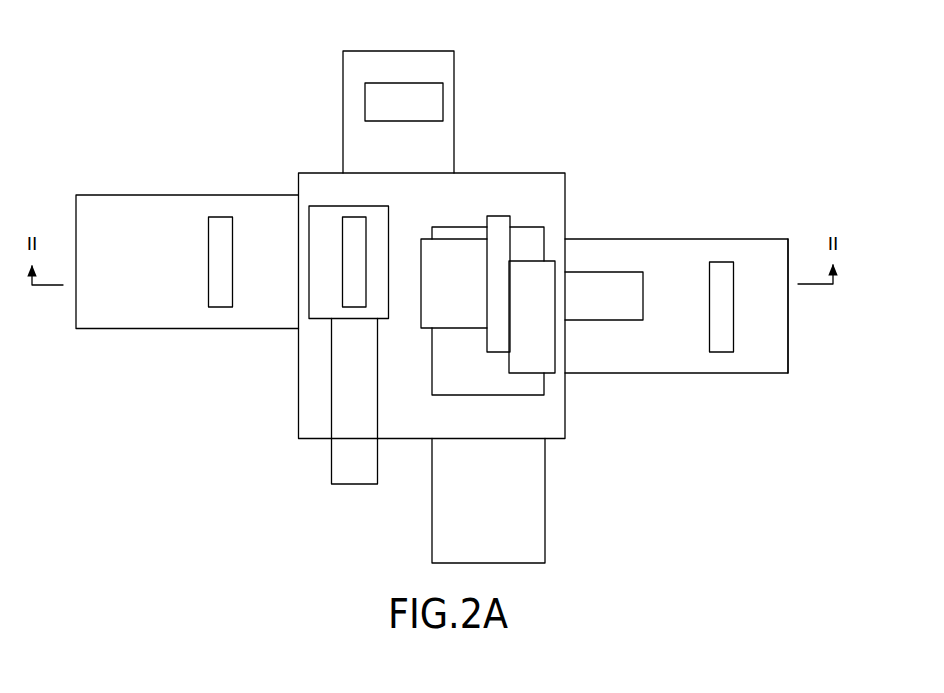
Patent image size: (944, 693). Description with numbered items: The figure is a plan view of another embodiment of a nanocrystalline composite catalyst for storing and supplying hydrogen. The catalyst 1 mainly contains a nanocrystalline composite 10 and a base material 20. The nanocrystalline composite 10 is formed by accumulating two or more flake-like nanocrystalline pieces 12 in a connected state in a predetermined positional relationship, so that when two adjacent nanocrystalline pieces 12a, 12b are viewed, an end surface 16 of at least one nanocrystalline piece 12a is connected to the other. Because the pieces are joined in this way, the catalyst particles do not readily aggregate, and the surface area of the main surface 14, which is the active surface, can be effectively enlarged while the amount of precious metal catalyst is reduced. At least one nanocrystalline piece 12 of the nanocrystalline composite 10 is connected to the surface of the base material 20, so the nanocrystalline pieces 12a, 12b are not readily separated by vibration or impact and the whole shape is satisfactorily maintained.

The catalyst 1 is at (598, 133).
The nanocrystalline composite 10 is at (497, 324).
The nanocrystalline piece 12 is at (126, 307).
The nanocrystalline piece 12a is at (538, 347).
The nanocrystalline piece 12b is at (497, 242).
The main surface 14 is at (663, 258).
The end surface 16 is at (790, 327).
The base material 20 is at (314, 363).